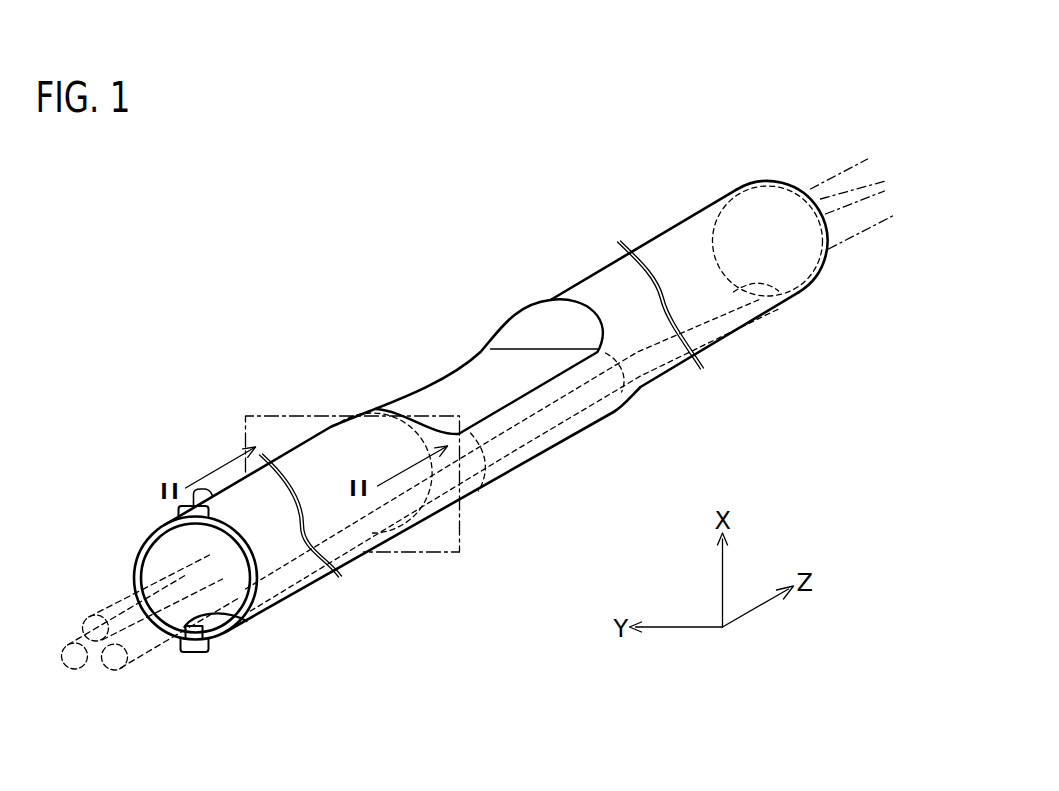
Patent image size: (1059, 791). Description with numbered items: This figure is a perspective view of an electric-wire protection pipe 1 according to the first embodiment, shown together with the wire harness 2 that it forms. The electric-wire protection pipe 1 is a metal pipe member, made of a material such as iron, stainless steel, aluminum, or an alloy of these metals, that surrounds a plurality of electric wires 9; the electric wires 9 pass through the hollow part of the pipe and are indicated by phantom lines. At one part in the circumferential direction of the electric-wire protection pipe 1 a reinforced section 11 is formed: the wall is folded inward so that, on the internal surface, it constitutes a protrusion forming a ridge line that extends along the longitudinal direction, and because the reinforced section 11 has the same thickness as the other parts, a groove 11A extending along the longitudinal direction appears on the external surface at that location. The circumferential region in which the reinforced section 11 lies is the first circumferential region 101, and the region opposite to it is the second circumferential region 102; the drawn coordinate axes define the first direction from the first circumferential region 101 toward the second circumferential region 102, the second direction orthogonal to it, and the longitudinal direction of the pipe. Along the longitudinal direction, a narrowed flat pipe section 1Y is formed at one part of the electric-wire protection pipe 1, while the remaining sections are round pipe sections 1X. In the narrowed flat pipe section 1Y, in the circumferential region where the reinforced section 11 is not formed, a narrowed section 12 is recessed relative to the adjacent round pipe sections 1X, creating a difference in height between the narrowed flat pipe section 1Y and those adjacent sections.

The electric-wire protection pipe 1 is at (160, 512).
The wire harness 2 is at (742, 399).
The electric wires 9 is at (90, 671).
The reinforced section 11 is at (222, 618).
The groove 11A is at (207, 645).
The narrowed section 12 is at (458, 383).
The first circumferential region 101 is at (192, 653).
The second circumferential region 102 is at (205, 491).
The round pipe sections 1X is at (668, 370).
The narrowed flat pipe section 1Y is at (538, 455).